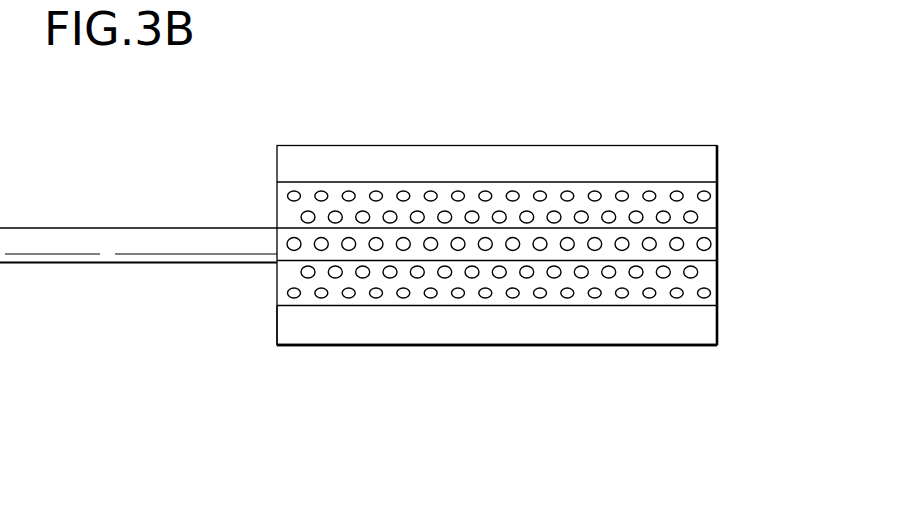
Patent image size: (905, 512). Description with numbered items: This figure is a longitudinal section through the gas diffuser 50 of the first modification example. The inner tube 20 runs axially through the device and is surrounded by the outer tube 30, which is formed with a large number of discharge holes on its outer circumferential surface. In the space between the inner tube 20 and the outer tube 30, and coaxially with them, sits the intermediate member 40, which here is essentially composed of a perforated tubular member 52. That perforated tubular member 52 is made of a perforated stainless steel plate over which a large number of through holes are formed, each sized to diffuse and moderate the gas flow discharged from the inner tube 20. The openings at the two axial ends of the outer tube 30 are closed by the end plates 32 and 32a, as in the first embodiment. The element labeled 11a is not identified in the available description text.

The flexible substrate strip 11a is at (68, 237).
The gas diffuser 50 is at (267, 163).
The perforated tubular member 52 is at (510, 131).
The intermediate member 40 is at (611, 181).
The inner tube 20 is at (690, 241).
The end plate 32 is at (718, 323).
The end plate 32a is at (276, 329).
The outer tube 30 is at (670, 347).